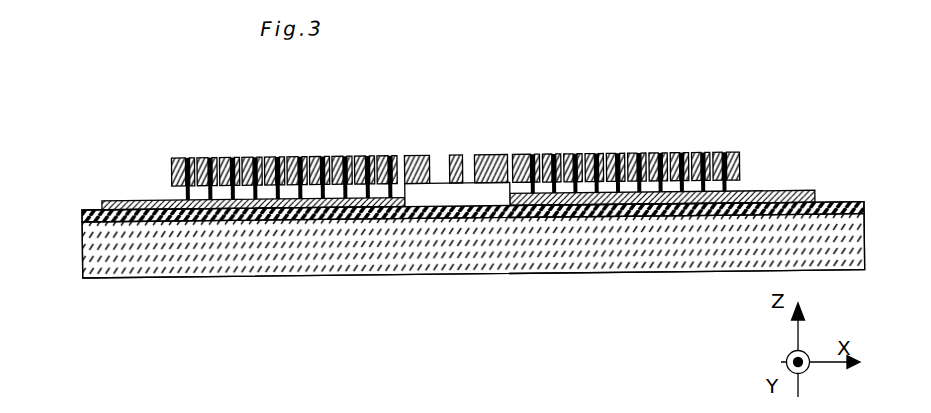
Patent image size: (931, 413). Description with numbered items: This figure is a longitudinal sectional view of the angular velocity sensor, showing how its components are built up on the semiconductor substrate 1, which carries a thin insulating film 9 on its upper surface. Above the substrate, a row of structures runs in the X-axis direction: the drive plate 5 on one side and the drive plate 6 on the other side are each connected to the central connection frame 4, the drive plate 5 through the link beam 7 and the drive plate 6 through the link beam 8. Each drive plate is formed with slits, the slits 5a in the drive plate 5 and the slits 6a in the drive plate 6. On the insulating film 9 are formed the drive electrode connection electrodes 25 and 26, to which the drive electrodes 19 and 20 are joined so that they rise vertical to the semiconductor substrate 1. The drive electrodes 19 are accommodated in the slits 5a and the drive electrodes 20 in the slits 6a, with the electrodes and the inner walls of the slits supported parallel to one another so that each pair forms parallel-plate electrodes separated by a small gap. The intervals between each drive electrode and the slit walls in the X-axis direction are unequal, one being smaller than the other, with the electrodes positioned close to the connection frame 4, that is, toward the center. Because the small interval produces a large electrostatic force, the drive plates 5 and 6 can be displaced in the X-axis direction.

The semiconductor substrate 1 is at (190, 279).
The connection frame 4 is at (458, 160).
The drive plate 5 is at (171, 160).
The slit 5a is at (231, 160).
The drive plate 6 is at (735, 160).
The slit 6a is at (685, 160).
The link beam 7 is at (433, 160).
The link beam 8 is at (498, 160).
The insulating film 9 is at (88, 209).
The drive electrode 19 is at (333, 160).
The drive electrode 20 is at (597, 160).
The drive electrode connection electrode 25 is at (122, 201).
The drive electrode connection electrode 26 is at (798, 198).